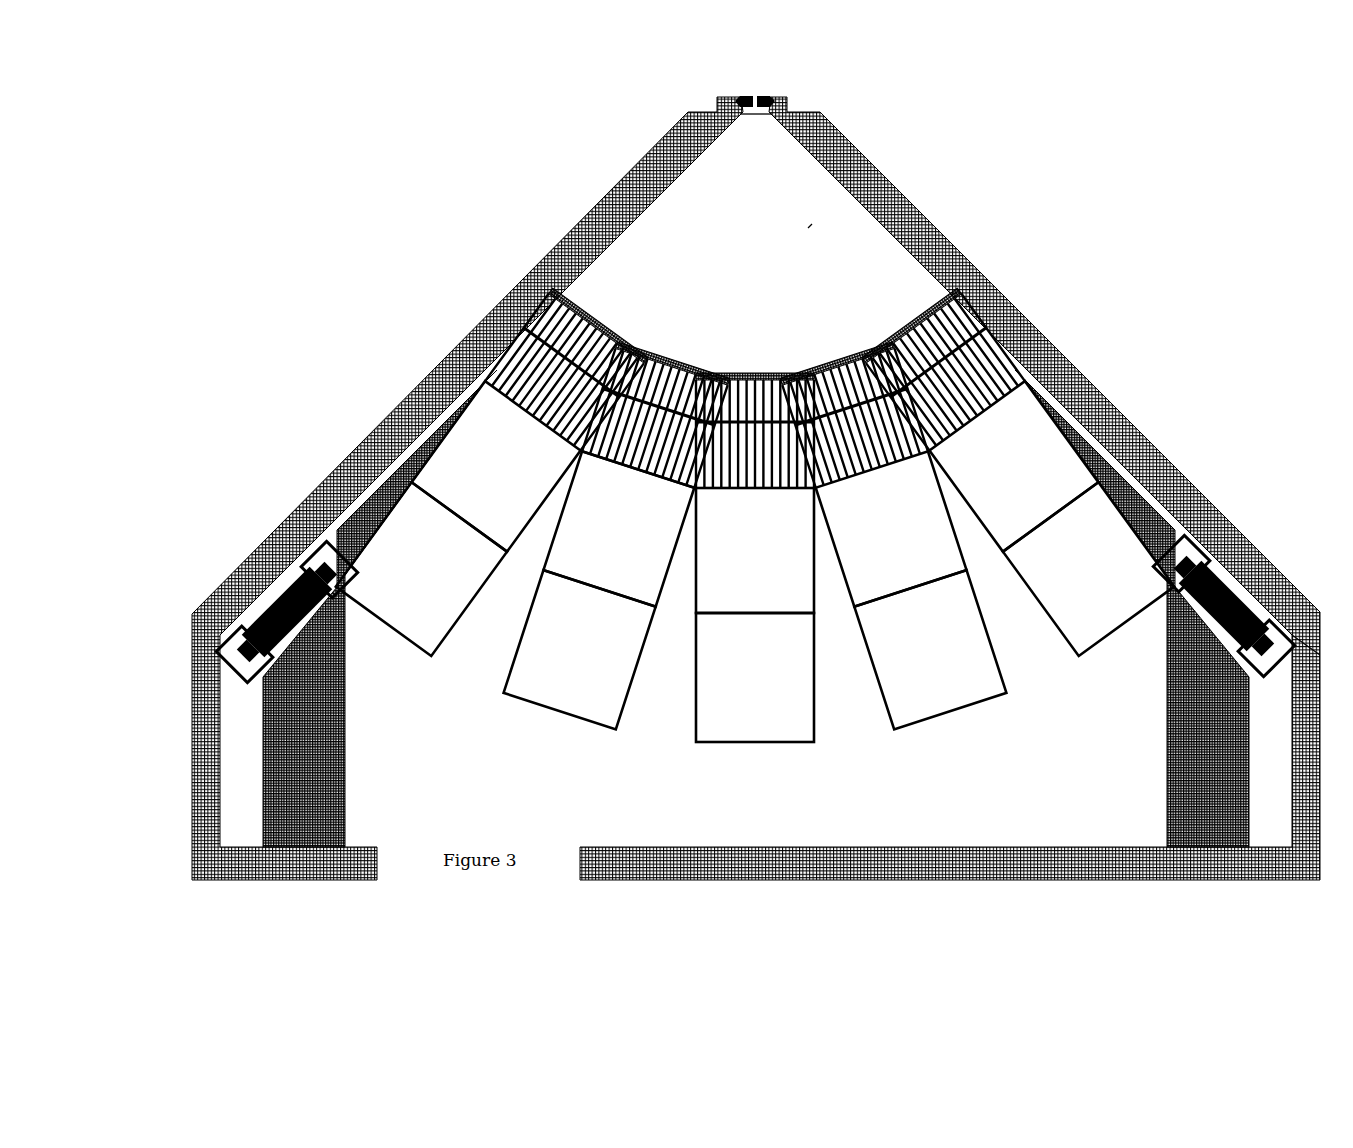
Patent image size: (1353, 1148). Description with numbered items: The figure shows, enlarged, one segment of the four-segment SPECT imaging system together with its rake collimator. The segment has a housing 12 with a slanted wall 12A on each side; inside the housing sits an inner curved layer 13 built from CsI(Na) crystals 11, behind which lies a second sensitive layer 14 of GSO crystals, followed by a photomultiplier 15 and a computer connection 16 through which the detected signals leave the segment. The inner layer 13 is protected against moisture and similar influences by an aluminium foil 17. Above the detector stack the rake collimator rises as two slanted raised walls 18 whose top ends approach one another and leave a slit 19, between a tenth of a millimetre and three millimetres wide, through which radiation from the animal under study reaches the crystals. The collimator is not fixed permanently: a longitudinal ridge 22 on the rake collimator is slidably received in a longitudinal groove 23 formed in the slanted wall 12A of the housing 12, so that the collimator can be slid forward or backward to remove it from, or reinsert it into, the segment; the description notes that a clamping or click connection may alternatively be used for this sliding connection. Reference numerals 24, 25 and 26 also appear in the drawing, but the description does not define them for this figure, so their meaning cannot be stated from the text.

The CsI(Na) crystals 11 is at (655, 385).
The housing 12 is at (1047, 845).
The slanted wall 12A is at (1195, 498).
The inner curved layer 13 is at (742, 370).
The second sensitive layer 14 is at (636, 456).
The photomultiplier 15 is at (618, 528).
The computer connection 16 is at (580, 649).
The aluminium foil 17 is at (598, 325).
The slanted raised walls 18 is at (985, 285).
The slit 19 is at (748, 125).
The longitudinal ridge 22 is at (1263, 568).
The longitudinal groove 23 is at (1165, 640).
The interior cavity 24 is at (812, 226).
The seal 25 is at (772, 100).
The seal 26 is at (747, 97).